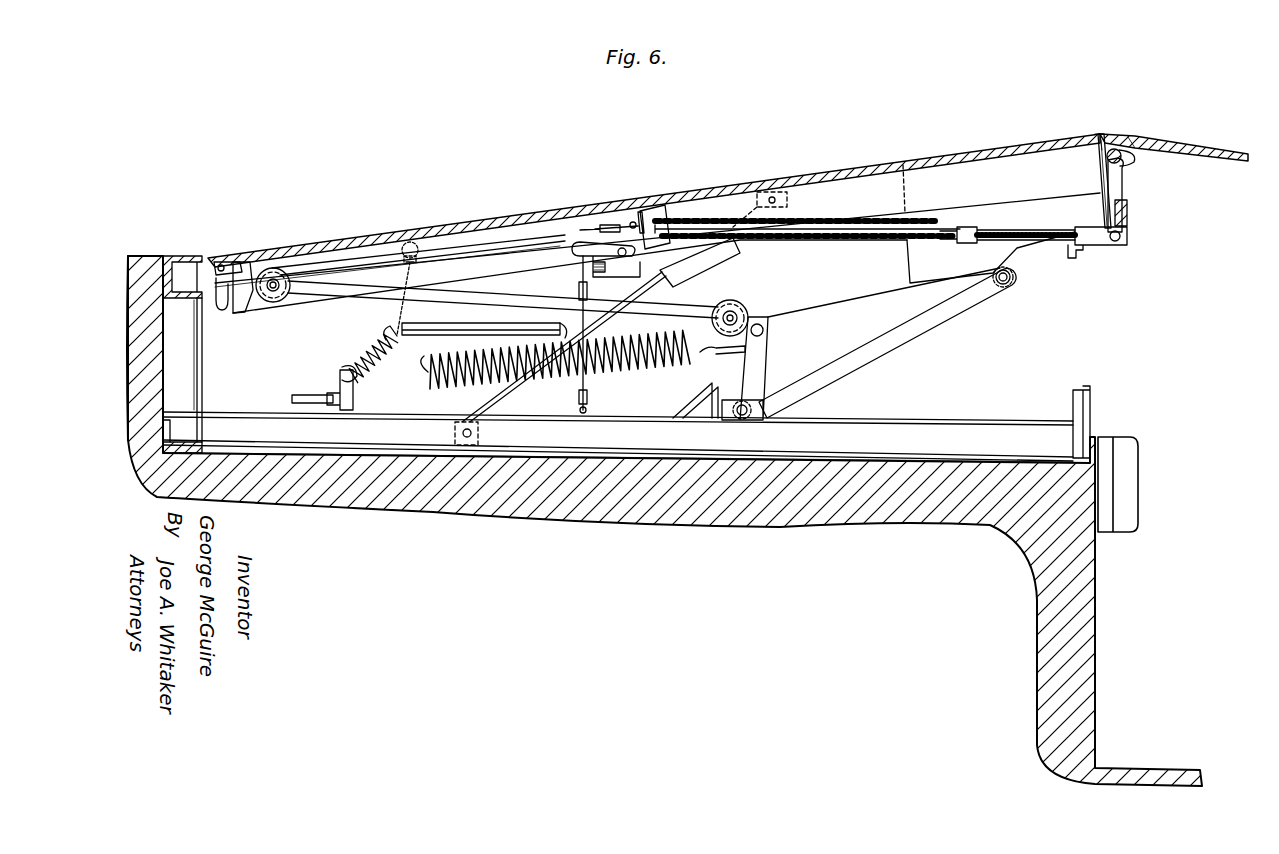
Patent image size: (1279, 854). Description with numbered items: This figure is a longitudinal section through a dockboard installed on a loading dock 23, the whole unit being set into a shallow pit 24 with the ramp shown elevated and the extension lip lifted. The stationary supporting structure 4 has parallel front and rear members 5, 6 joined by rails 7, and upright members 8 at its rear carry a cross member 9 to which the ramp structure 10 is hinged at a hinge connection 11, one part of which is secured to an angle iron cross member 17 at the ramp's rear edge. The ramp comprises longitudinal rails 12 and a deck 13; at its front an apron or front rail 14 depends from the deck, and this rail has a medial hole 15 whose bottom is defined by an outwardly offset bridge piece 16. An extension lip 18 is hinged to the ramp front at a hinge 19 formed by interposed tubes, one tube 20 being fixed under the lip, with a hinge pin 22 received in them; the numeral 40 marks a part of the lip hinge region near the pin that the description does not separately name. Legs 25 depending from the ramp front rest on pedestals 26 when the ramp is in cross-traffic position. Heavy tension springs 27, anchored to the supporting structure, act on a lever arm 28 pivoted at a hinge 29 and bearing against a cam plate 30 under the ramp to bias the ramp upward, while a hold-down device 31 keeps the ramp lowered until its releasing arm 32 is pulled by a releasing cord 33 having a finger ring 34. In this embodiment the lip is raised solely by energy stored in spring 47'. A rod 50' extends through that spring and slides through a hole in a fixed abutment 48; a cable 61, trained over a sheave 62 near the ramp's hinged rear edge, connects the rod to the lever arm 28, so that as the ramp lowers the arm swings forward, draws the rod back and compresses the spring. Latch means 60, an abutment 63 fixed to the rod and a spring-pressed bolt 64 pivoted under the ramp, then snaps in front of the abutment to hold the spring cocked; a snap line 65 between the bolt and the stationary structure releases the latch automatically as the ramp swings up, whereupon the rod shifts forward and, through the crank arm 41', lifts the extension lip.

The stationary mounting or supporting structure 4 is at (137, 238).
The front member 5 is at (1108, 440).
The rear member 6 is at (201, 412).
The rail 7 is at (903, 440).
The upright member 8 is at (200, 356).
The cross member 9 is at (193, 254).
The ramp structure 10 is at (430, 195).
The hinge connection 11 is at (225, 262).
The longitudinal rail 12 is at (505, 225).
The deck 13 is at (582, 205).
The apron or front rail 14 is at (1098, 170).
The hole 15 is at (1100, 180).
The bridge piece 16 is at (1130, 215).
The angle iron cross member 17 is at (246, 310).
The extension lip 18 is at (1178, 148).
The hinge 19 is at (1117, 149).
The tube 20 is at (1103, 134).
The hinge pin or pintle 22 is at (1132, 166).
The loading dock 23 is at (160, 254).
The pit 24 is at (616, 455).
The leg 25 is at (1080, 260).
The pedestal 26 is at (1080, 388).
The tension spring 27 is at (472, 355).
The lever arm 28 is at (925, 323).
The hinge connection of lever arm 29 is at (740, 402).
The cam plate 30 is at (1020, 255).
The hold-down device 31 is at (530, 347).
The releasing arm 32 is at (422, 332).
The releasing cable or cord 33 is at (386, 326).
The finger ring 34 is at (397, 240).
The lid edge 40 is at (1133, 140).
The crank arm 41' is at (1149, 195).
The spring 47' is at (807, 182).
The fixed abutment 48 is at (700, 222).
The rod 50' is at (868, 194).
The latch means 60 is at (553, 252).
The cable 61 is at (548, 230).
The sheave 62 is at (278, 268).
The abutment 63 is at (655, 208).
The spring pressed finger or bolt 64 is at (605, 248).
The snap line 65 is at (560, 307).